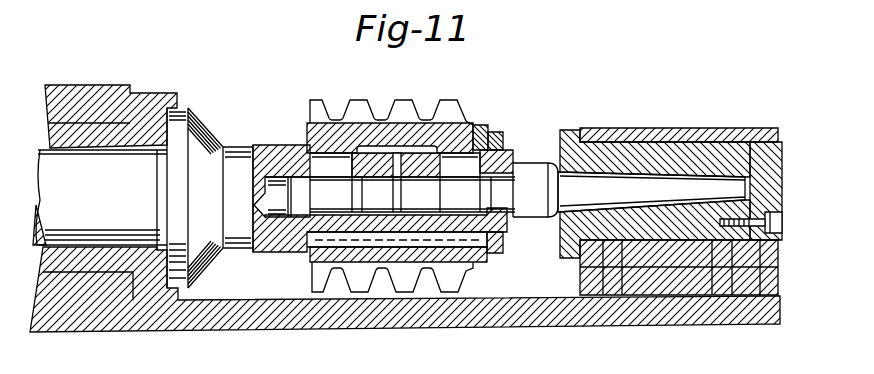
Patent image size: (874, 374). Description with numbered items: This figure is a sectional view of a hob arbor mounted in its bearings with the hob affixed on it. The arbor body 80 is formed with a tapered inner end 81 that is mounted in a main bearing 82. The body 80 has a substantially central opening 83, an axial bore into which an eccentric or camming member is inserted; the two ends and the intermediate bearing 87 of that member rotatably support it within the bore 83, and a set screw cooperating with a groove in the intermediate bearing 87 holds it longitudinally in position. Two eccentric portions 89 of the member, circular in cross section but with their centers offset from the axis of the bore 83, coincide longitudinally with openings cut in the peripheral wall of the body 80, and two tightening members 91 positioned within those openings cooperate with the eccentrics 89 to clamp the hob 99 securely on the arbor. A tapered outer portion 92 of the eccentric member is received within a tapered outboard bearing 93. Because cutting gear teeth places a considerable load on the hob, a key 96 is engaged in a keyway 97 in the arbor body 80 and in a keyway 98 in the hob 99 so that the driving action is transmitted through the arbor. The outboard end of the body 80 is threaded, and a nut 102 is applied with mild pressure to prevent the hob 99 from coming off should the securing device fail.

The hob arbor body 80 is at (230, 117).
The tapered inner end 81 is at (96, 176).
The main bearing 82 is at (148, 94).
The central opening 83 is at (272, 194).
The intermediate bearing 87 is at (508, 193).
The eccentric portions 89 is at (328, 190).
The tightening members 91 is at (347, 160).
The tapered outer portion 92 is at (730, 186).
The tapered outboard bearing 93 is at (650, 150).
The key 96 is at (473, 263).
The keyway 97 is at (503, 236).
The keyway 98 is at (307, 243).
The hob 99 is at (311, 264).
The nut 102 is at (504, 138).